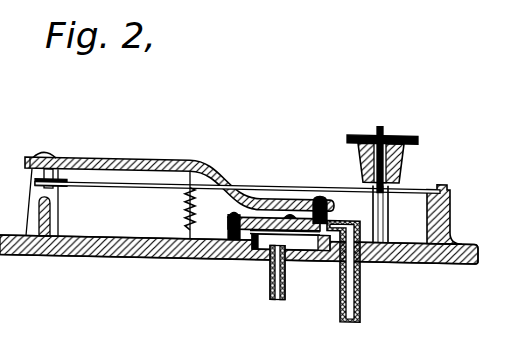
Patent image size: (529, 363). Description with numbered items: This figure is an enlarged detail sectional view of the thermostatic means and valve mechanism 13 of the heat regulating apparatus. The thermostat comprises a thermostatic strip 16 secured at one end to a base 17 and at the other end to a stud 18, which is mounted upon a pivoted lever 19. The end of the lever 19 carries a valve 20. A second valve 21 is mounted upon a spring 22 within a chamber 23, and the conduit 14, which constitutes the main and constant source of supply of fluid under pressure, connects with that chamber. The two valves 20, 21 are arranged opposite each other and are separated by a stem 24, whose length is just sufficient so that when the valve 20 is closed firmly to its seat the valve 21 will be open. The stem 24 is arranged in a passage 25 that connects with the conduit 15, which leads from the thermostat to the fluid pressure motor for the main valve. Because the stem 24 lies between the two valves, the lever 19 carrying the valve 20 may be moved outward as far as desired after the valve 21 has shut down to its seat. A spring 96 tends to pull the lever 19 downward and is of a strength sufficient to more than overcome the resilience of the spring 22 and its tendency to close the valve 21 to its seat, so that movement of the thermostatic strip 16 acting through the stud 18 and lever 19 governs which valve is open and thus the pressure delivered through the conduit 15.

The thermostatic means and valve mechanism 13 is at (232, 170).
The pivoted lever 19 is at (179, 174).
The thermostatic strip 16 is at (237, 177).
The stem 24 is at (300, 199).
The valve 20 is at (330, 211).
The passage 25 is at (360, 222).
The base 17 is at (163, 272).
The stud 18 is at (53, 188).
The spring 96 is at (186, 210).
The spring 22 is at (243, 252).
The chamber 23 is at (277, 238).
The valve 21 is at (318, 238).
The conduit 14 is at (280, 300).
The conduit 15 is at (359, 292).